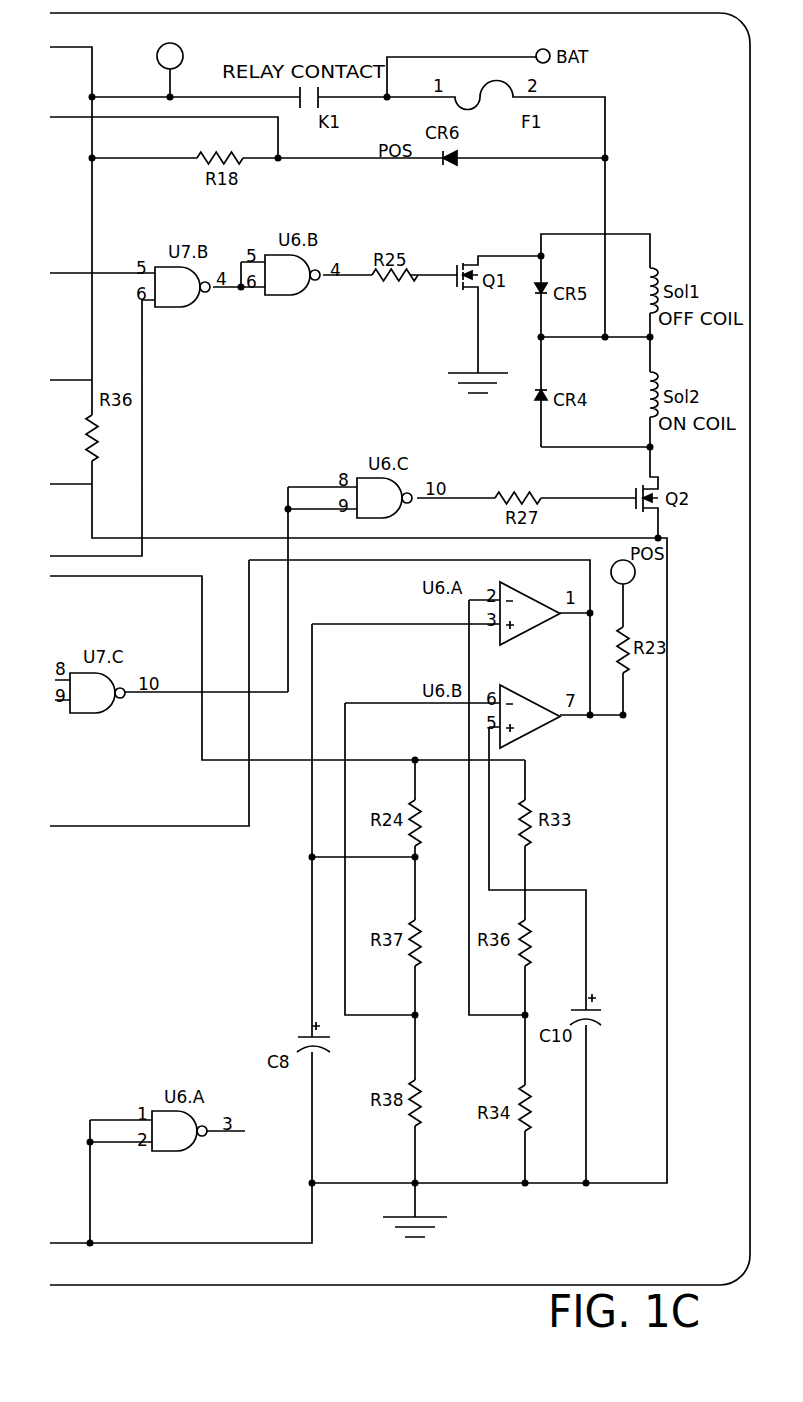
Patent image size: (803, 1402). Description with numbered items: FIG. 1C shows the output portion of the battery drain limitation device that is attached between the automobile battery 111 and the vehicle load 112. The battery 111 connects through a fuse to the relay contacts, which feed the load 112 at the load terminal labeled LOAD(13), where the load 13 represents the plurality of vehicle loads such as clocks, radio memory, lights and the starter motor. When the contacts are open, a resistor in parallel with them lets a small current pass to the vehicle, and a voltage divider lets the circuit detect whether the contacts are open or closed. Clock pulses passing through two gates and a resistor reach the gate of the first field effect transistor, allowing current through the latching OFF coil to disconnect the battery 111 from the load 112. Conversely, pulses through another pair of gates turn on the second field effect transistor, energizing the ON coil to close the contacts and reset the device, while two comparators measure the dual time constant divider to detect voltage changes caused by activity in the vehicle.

The automobile battery 111 is at (549, 50).
The vehicle load 112 is at (183, 53).
The load 13 is at (156, 59).